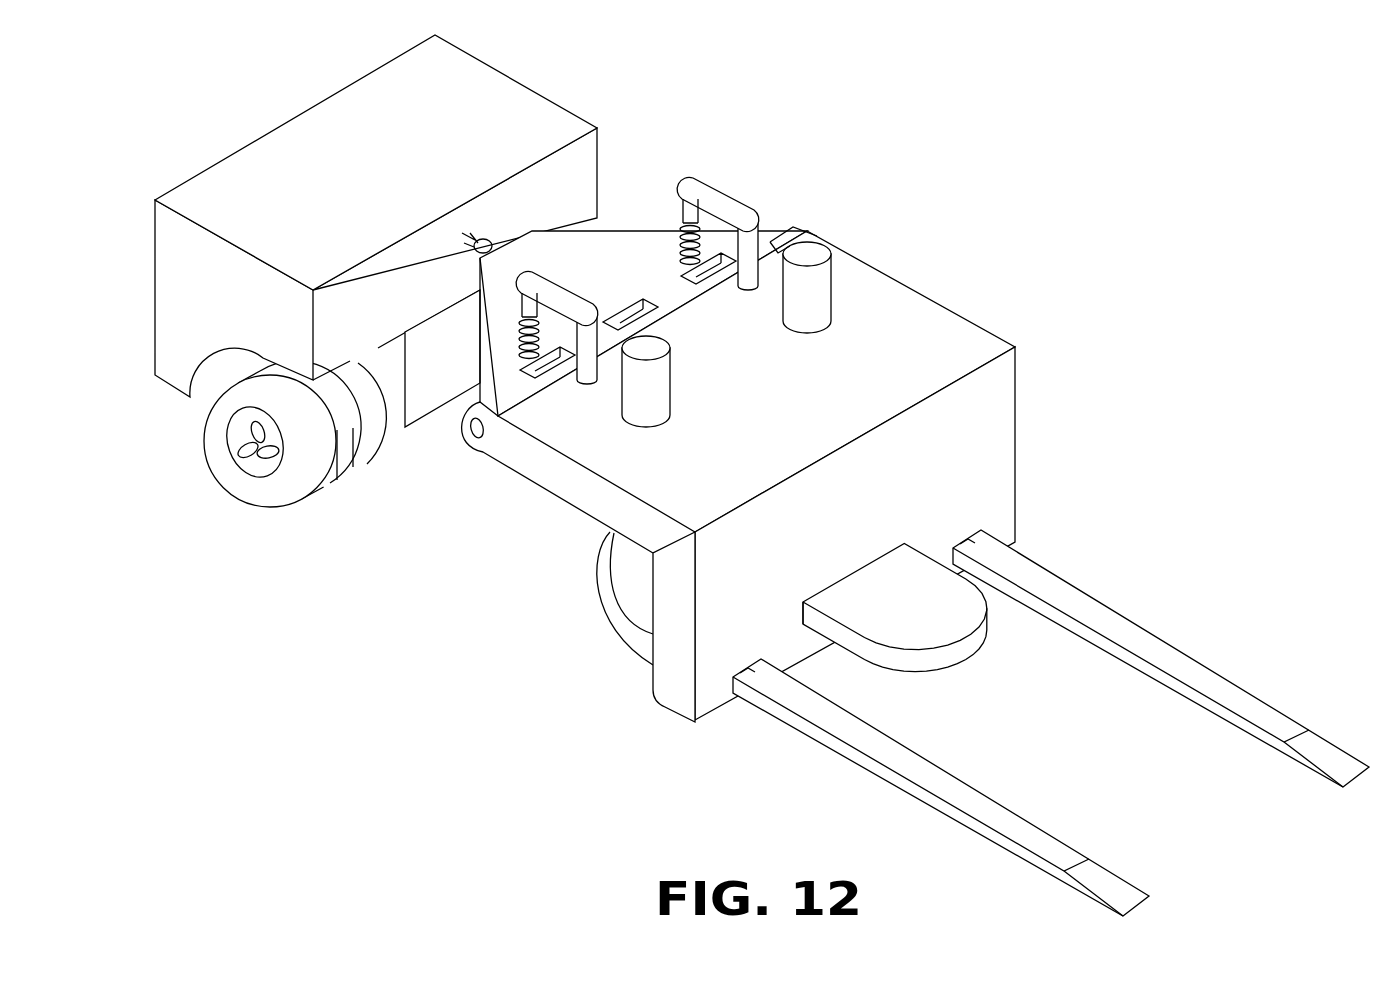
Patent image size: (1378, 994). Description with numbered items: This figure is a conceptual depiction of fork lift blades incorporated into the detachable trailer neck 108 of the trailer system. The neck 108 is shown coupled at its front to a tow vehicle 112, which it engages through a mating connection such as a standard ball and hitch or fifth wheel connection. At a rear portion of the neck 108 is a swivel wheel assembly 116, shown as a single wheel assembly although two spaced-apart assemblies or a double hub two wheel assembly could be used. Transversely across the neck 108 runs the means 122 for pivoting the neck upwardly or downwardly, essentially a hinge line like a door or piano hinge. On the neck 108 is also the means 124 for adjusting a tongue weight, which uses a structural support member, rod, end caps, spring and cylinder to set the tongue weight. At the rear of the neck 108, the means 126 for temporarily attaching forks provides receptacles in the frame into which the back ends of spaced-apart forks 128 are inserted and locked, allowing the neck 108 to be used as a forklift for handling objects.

The trailer neck 108 is at (864, 517).
The tow vehicle 112 is at (377, 175).
The swivel wheel assembly 116 is at (613, 592).
The means for pivoting the neck 122 is at (650, 318).
The means for adjusting a tongue weight 124 is at (744, 185).
The means for temporarily attaching spaced-apart forks 126 is at (743, 663).
The forks 128 is at (930, 785).